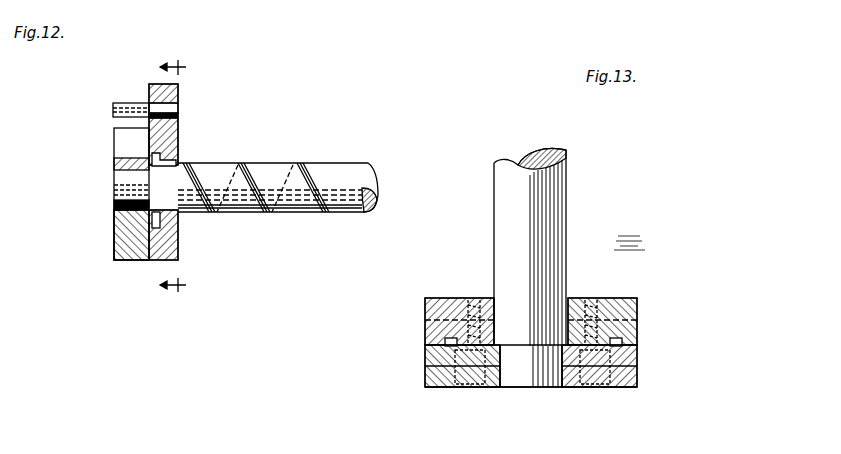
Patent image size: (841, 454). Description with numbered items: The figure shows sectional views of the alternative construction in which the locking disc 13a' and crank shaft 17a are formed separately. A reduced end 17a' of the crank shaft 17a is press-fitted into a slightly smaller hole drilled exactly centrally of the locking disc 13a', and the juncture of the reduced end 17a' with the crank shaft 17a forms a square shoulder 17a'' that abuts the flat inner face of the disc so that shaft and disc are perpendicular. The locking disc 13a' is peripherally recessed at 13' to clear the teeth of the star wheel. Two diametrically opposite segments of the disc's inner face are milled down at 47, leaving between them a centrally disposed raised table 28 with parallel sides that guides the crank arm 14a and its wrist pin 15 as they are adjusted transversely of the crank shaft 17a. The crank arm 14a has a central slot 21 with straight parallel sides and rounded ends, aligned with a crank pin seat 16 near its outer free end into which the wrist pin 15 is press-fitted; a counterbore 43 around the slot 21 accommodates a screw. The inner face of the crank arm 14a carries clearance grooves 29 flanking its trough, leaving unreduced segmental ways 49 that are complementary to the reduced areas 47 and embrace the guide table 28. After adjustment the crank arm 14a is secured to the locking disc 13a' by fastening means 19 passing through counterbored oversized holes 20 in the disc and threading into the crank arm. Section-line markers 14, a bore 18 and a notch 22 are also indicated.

In FIG. 12, the clearance recess 13' is at (108, 190).
In FIG. 12, the locking disc 13a' is at (145, 248).
In FIG. 13, the locking disc 13a' is at (502, 401).
In FIG. 12, the section line 14 is at (186, 175).
In FIG. 12, the crank arm 14a is at (178, 126).
In FIG. 13, the crank arm 14a is at (577, 298).
In FIG. 12, the wrist pin 15 is at (121, 103).
In FIG. 12, the crank pin seat 16 is at (178, 96).
In FIG. 12, the crank shaft 17a is at (278, 174).
In FIG. 13, the crank shaft 17a is at (510, 247).
In FIG. 12, the reduced end 17a' is at (105, 199).
In FIG. 13, the reduced end 17a' is at (551, 381).
In FIG. 12, the square shoulder 17a'' is at (105, 219).
In FIG. 13, the square shoulder 17a'' is at (513, 381).
In FIG. 13, the threaded bore 18 is at (491, 298).
In FIG. 13, the fastening means 19 is at (432, 388).
In FIG. 13, the counterbored oversized holes 20 is at (428, 378).
In FIG. 12, the slot 21 is at (178, 158).
In FIG. 12, the lower notch 22 is at (162, 218).
In FIG. 13, the raised table 28 is at (448, 298).
In FIG. 13, the clearance grooves 29 is at (428, 318).
In FIG. 12, the counterbore 43 is at (178, 142).
In FIG. 13, the reduced areas 47 is at (428, 353).
In FIG. 13, the segmental ways 49 is at (445, 345).